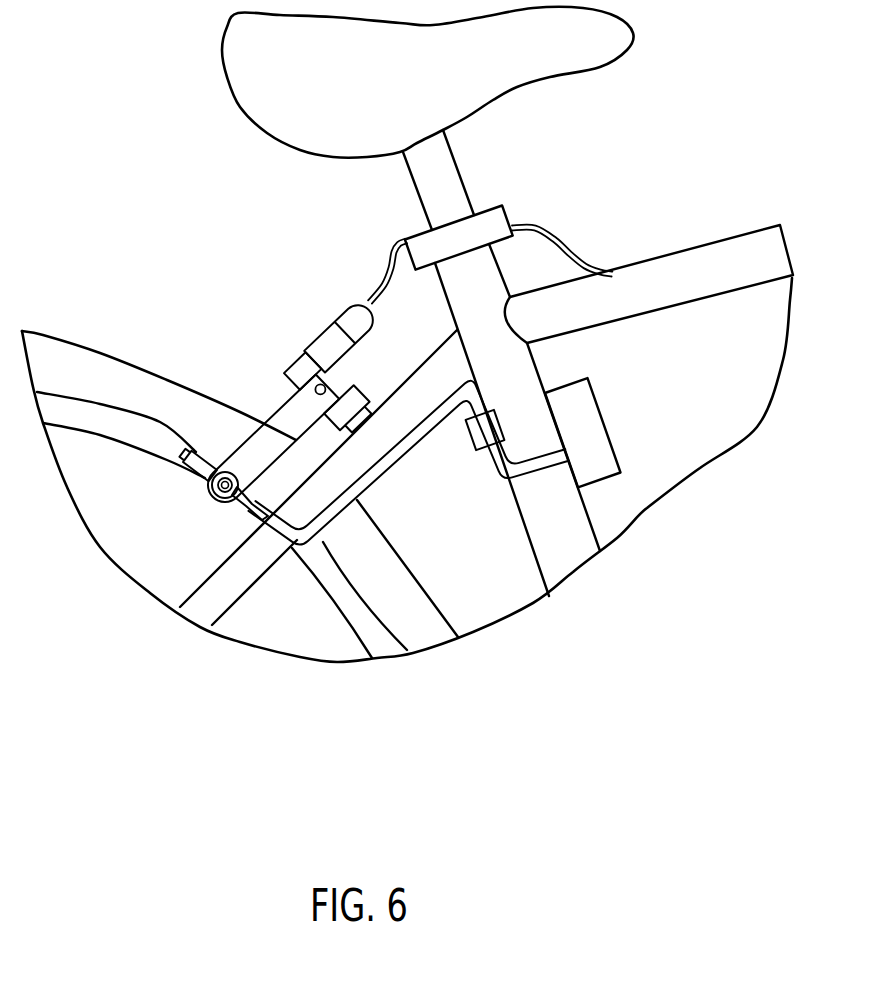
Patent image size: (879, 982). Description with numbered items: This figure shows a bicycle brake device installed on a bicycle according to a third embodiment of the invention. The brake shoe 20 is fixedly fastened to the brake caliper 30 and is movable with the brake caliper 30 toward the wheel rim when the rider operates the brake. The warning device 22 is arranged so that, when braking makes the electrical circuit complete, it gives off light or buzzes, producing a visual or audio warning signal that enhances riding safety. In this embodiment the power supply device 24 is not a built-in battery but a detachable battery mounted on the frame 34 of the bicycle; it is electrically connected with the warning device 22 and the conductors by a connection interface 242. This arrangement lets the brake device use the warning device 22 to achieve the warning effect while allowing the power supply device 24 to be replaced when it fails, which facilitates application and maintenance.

The brake shoe 20 is at (203, 455).
The warning device 22 is at (186, 455).
The brake caliper 30 is at (280, 415).
The power supply device 24 is at (599, 465).
The connection interface 242 is at (480, 443).
The frame 34 is at (560, 555).